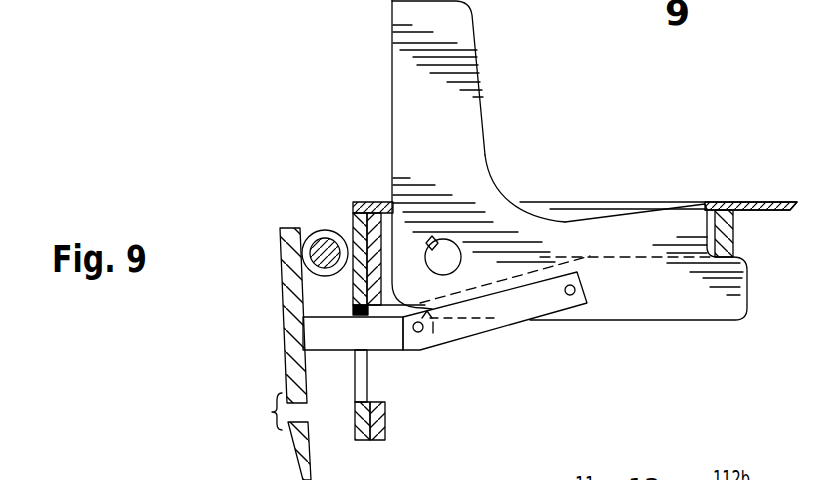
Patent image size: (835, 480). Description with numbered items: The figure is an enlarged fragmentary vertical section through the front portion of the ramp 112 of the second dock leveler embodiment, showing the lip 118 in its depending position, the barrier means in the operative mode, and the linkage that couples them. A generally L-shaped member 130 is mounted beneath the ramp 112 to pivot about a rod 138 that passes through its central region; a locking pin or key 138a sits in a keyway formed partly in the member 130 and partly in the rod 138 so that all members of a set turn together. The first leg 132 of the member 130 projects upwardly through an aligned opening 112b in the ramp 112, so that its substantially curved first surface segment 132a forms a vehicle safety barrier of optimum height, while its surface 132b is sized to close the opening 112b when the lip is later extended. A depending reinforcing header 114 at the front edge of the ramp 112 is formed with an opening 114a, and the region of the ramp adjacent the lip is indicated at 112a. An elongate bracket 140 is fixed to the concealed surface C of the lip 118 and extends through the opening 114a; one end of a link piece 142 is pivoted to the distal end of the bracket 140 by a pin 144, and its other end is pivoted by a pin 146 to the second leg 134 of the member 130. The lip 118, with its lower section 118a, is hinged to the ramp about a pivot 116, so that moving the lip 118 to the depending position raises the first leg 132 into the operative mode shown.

The ramp 112 is at (791, 195).
The left flange of mounting plate 112a is at (363, 202).
The aligned opening 112b is at (657, 203).
The depending reinforcing header 114 is at (357, 423).
The opening in reinforcing header 114a is at (360, 388).
The pivot rod 116 is at (316, 236).
The lip 118 is at (268, 305).
The lower plate section 118a is at (303, 477).
The concealed surface C is at (312, 376).
The generally L-shaped member 130 is at (500, 102).
The first leg 132 is at (400, 45).
The first surface segment 132a is at (528, 170).
The surface of first leg 132b is at (390, 110).
The second leg 134 is at (682, 310).
The rod 138 is at (452, 265).
The locking pin or key 138a is at (438, 238).
The bracket 140 is at (368, 344).
The link piece 142 is at (533, 303).
The pin 144 is at (427, 325).
The pin 146 is at (585, 274).